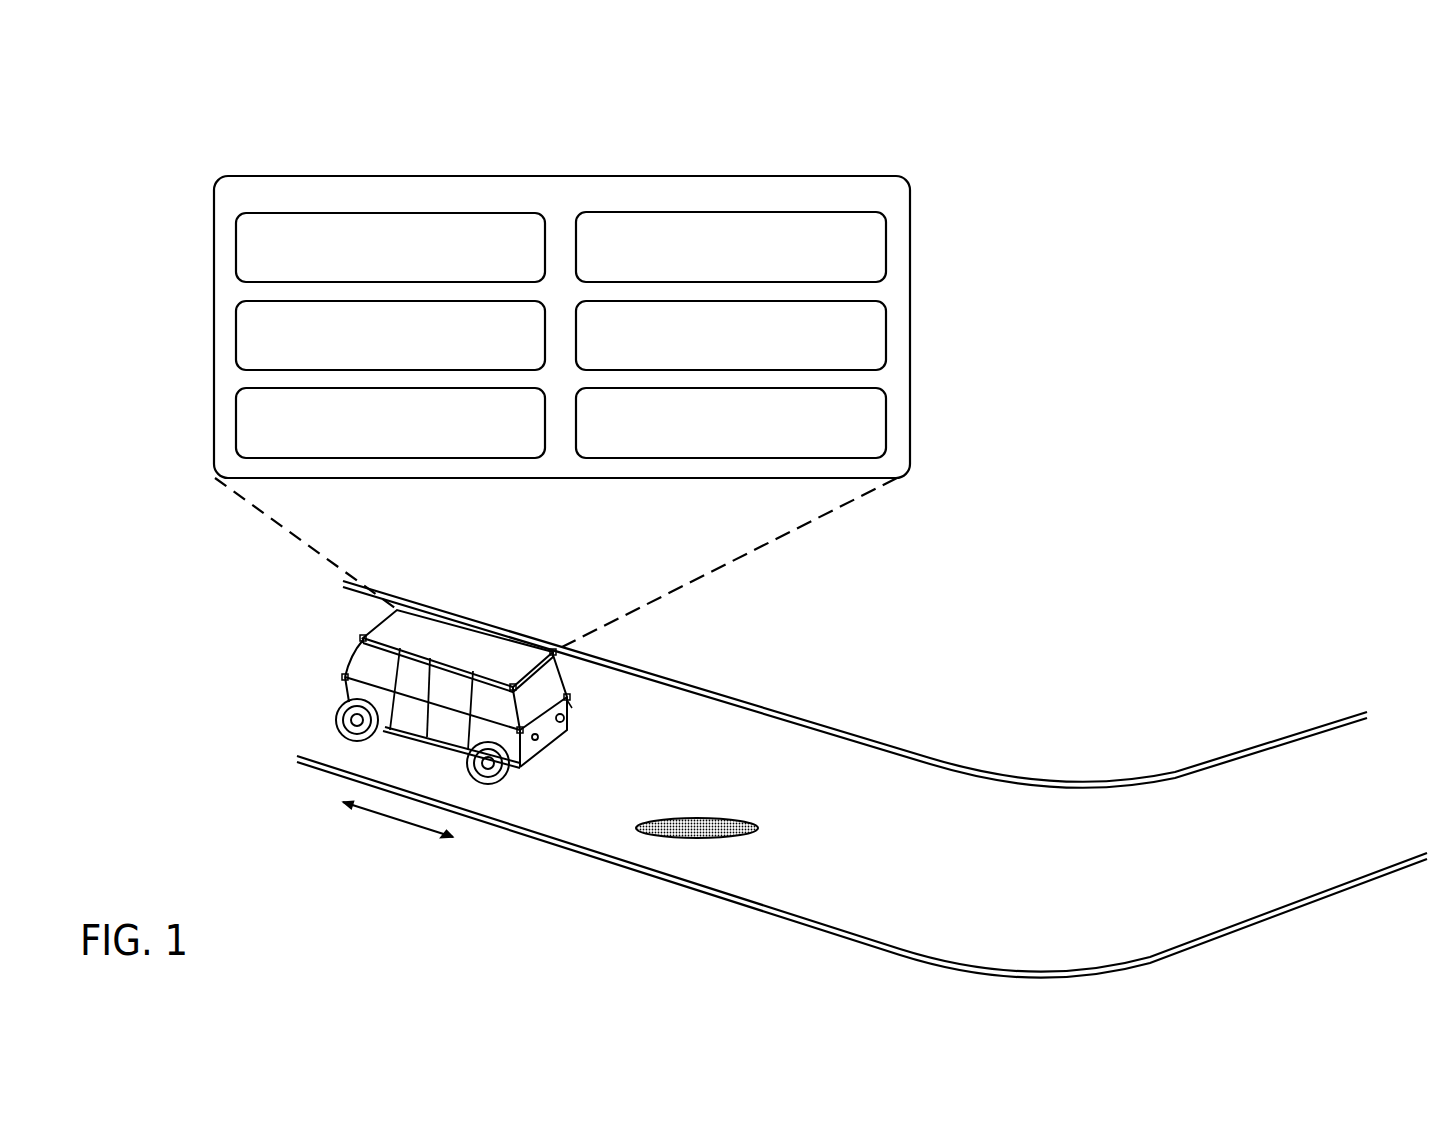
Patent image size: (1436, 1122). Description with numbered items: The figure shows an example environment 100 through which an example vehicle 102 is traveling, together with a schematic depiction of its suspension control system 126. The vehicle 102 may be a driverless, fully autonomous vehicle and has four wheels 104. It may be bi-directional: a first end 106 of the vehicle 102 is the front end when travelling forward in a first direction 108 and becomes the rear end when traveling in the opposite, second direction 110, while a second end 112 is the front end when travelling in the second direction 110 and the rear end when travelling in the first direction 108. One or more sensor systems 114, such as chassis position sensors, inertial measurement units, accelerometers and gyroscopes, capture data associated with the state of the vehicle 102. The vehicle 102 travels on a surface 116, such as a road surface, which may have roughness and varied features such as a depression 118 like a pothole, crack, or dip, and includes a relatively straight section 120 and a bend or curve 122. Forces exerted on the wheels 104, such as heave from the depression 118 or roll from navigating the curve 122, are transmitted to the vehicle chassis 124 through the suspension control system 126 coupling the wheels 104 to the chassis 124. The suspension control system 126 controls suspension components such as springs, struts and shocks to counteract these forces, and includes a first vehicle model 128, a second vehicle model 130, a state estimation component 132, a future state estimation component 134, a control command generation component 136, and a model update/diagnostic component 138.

The environment 100 is at (172, 76).
The vehicle 102 is at (446, 675).
The wheels 104 is at (348, 728).
The first end 106 is at (550, 738).
The first direction 108 is at (418, 831).
The second direction 110 is at (319, 795).
The second end 112 is at (336, 652).
The sensor systems 114 is at (361, 635).
The surface 116 is at (862, 779).
The depression 118 is at (690, 837).
The straight section 120 is at (653, 708).
The curve 122 is at (1082, 853).
The vehicle chassis 124 is at (403, 725).
The suspension control system 126 is at (562, 411).
The first vehicle model 128 is at (390, 247).
The second vehicle model 130 is at (390, 335).
The state estimation component 132 is at (390, 423).
The future state estimation component 134 is at (731, 247).
The control command generation component 136 is at (731, 335).
The model update/diagnostic component 138 is at (731, 423).